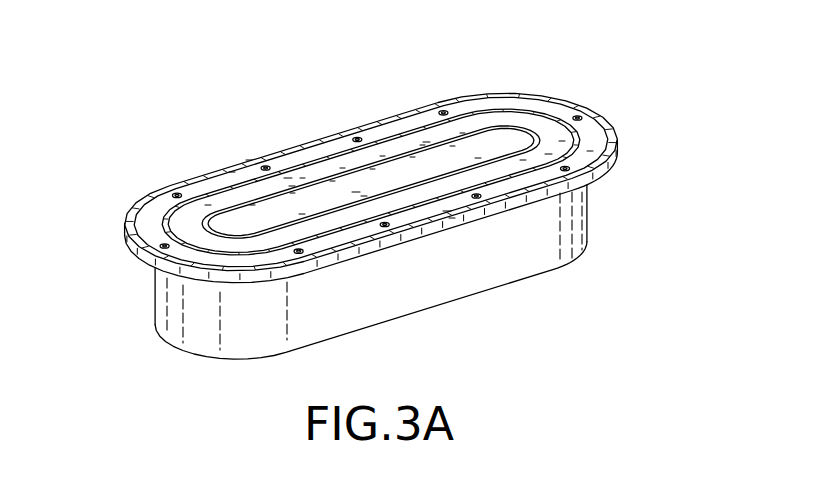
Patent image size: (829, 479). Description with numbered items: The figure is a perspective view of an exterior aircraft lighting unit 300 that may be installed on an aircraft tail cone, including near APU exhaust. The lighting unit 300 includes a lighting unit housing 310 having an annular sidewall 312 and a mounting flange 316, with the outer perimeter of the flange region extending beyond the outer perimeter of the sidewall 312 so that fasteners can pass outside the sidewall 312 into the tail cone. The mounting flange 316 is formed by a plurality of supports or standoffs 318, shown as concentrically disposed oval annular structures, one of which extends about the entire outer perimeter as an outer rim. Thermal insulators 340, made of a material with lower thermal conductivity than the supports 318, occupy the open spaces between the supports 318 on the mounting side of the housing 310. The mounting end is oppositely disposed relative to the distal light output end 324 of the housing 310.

The exterior aircraft lighting unit 300 is at (608, 80).
The lighting unit housing 310 is at (600, 215).
The annular sidewall 312 is at (523, 259).
The mounting flange 316 is at (632, 148).
The supports or standoffs 318 is at (412, 152).
The light output end 324 is at (463, 307).
The thermal insulator 340 is at (312, 198).